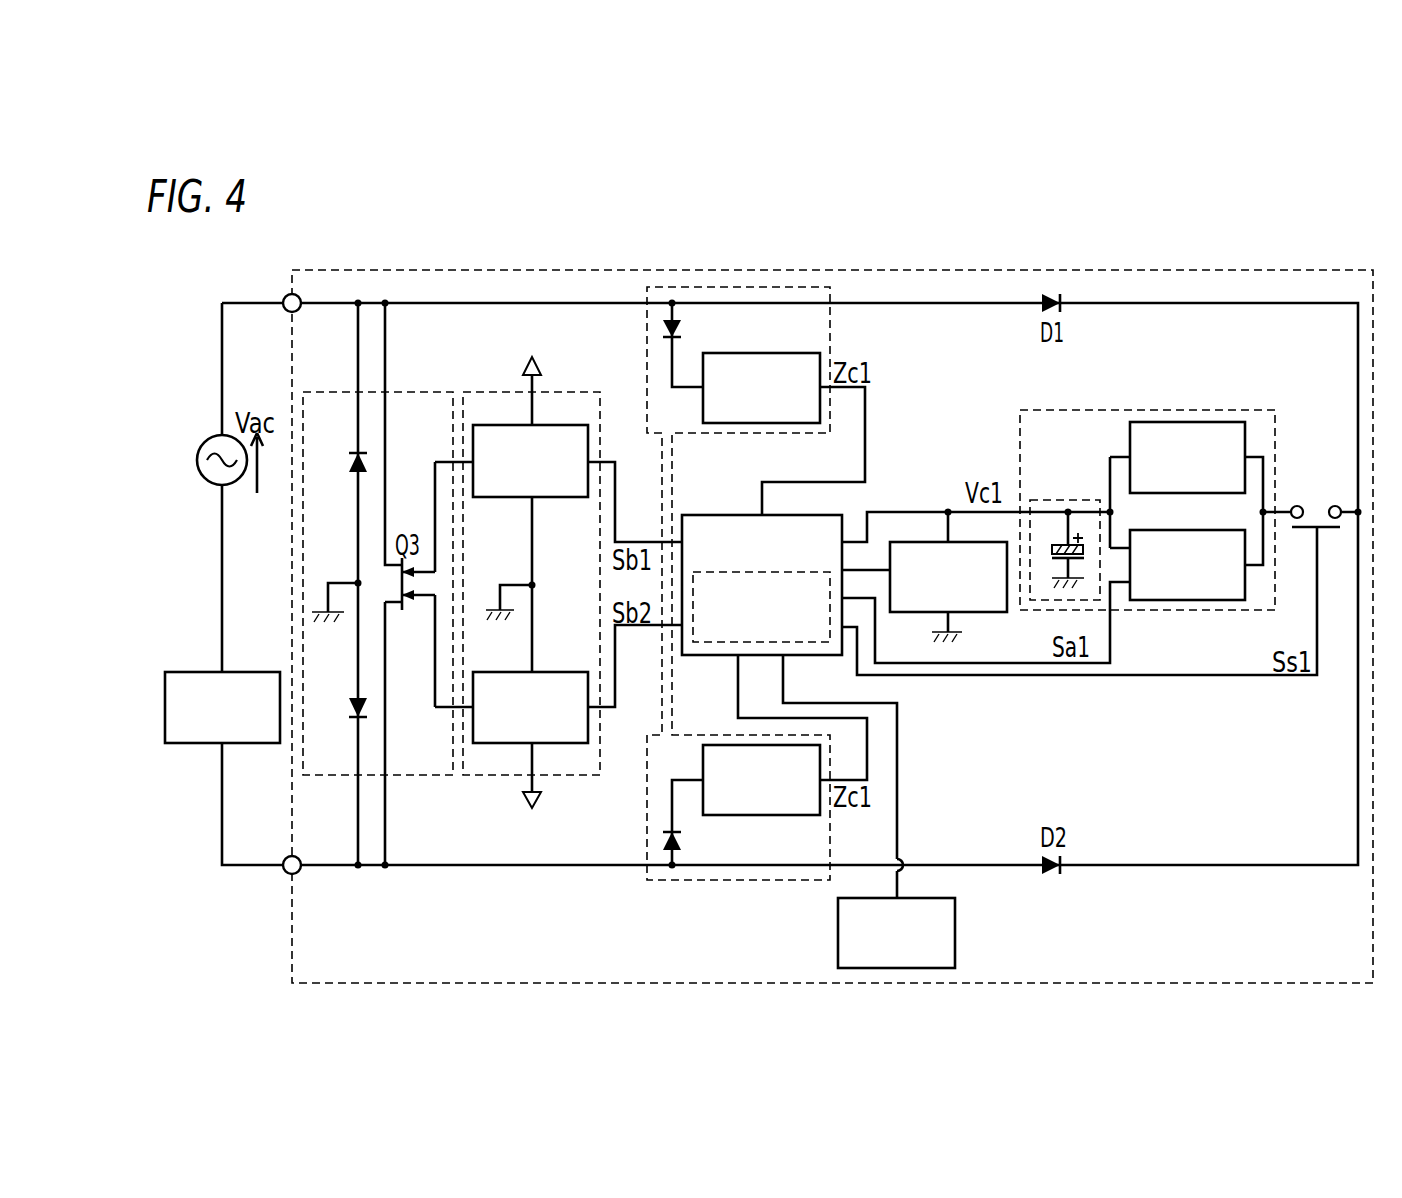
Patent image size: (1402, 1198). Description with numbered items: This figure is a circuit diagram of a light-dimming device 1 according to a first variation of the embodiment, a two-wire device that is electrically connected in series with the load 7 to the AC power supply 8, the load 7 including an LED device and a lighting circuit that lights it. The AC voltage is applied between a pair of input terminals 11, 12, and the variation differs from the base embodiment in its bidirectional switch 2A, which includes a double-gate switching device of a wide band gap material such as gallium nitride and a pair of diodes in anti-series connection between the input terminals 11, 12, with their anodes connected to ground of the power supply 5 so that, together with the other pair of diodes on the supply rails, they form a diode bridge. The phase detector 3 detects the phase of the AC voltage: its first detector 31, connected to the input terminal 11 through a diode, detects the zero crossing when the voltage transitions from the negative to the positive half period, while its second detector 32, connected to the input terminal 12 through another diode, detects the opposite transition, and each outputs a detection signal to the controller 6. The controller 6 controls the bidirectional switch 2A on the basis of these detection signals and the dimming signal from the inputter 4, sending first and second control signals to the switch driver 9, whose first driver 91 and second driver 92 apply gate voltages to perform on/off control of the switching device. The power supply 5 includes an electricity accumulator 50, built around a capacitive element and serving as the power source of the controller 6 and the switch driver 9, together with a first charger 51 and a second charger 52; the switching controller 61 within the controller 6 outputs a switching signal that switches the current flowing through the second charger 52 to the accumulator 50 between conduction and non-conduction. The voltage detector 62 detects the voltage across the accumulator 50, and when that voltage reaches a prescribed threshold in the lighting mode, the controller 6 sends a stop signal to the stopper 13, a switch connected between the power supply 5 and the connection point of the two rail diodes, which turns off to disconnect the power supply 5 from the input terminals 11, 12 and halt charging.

The light-dimming device 1 is at (1371, 262).
The bidirectional switch 2A is at (330, 391).
The phase detector 3 is at (831, 337).
The first detector 31 is at (782, 352).
The second detector 32 is at (782, 816).
The inputter 4 is at (955, 933).
The power supply 5 is at (1260, 408).
The electricity accumulator 50 is at (1072, 499).
The first charger 51 is at (1190, 421).
The second charger 52 is at (1190, 601).
The controller 6 is at (726, 514).
The switching controller 61 is at (720, 643).
The voltage detector 62 is at (990, 607).
The load 7 is at (190, 671).
The AC power supply 8 is at (212, 441).
The switch driver 9 is at (498, 390).
The first driver 91 is at (505, 498).
The second driver 92 is at (508, 671).
The input terminal 11 is at (285, 297).
The input terminal 12 is at (286, 873).
The stopper 13 is at (1317, 506).